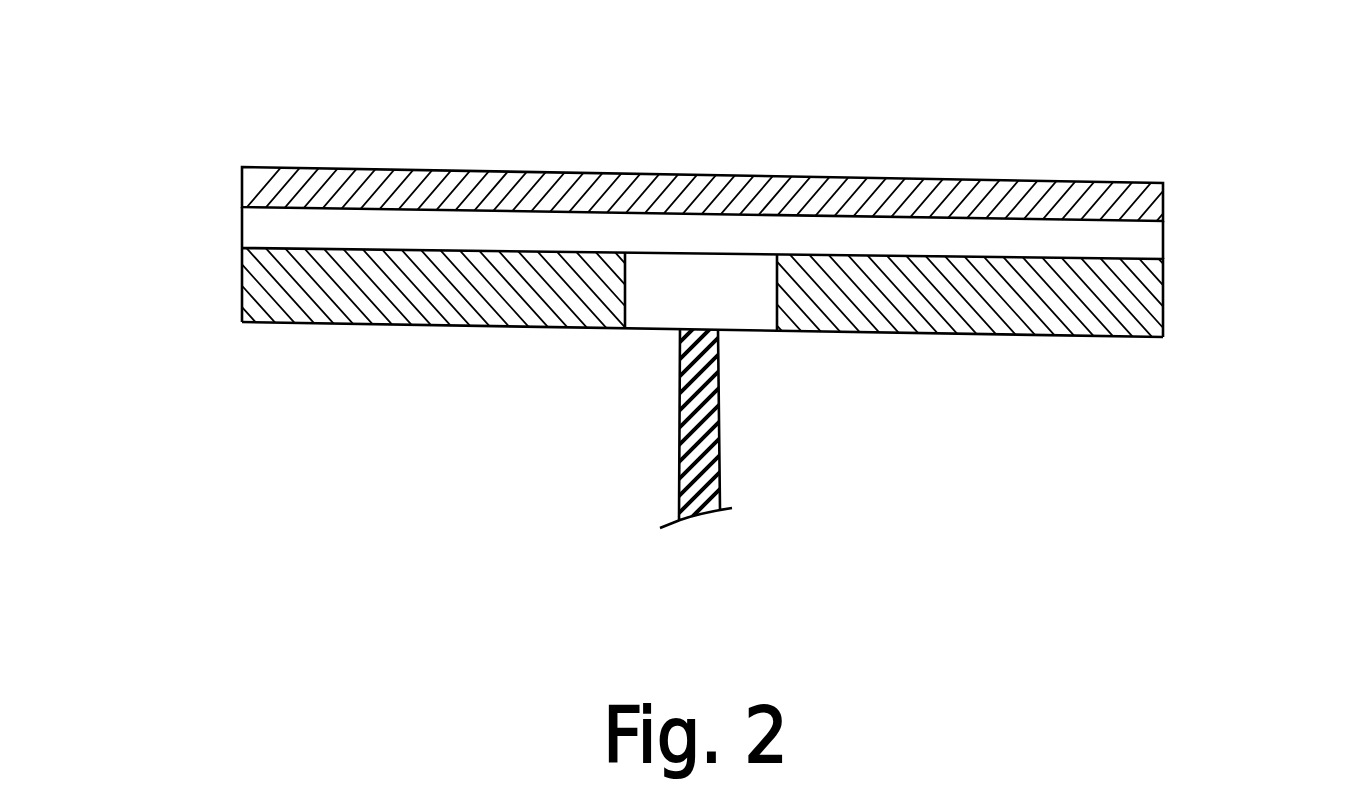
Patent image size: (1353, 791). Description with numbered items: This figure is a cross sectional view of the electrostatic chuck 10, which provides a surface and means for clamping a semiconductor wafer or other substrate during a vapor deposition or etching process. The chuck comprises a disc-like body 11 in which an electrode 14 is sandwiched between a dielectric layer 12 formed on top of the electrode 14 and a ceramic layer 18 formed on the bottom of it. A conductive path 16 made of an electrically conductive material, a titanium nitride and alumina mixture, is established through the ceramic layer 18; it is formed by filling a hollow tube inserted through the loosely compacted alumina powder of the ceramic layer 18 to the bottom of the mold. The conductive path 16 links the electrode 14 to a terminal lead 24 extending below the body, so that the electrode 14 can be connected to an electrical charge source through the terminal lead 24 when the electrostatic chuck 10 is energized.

The electrostatic chuck 10 is at (1043, 160).
The disc-like body 11 is at (1137, 310).
The dielectric layer 12 is at (395, 180).
The electrode 14 is at (273, 232).
The conductive path 16 is at (728, 307).
The ceramic layer 18 is at (423, 315).
The terminal lead 24 is at (673, 413).